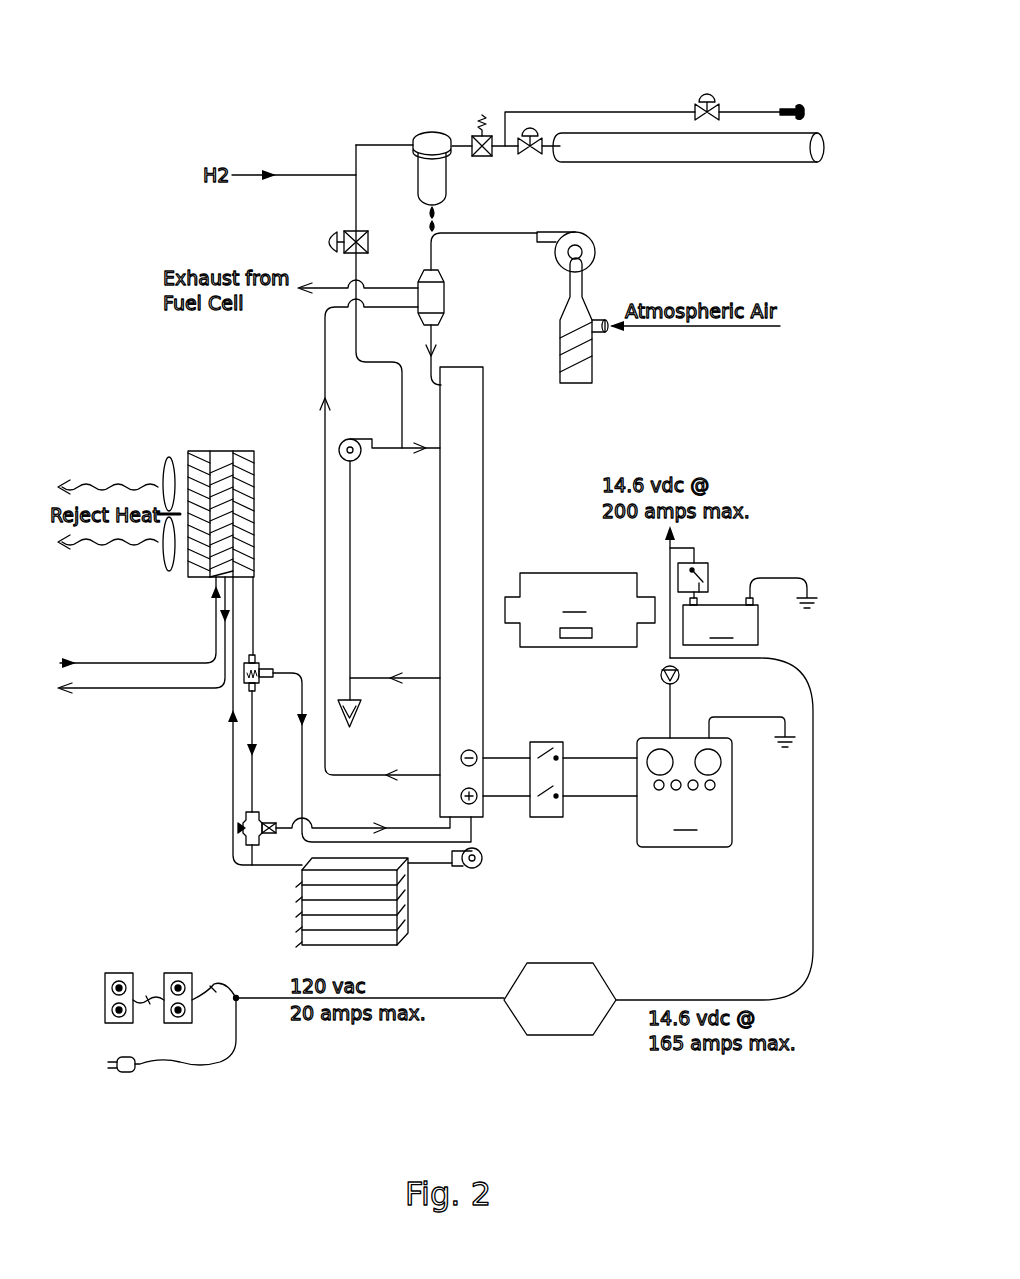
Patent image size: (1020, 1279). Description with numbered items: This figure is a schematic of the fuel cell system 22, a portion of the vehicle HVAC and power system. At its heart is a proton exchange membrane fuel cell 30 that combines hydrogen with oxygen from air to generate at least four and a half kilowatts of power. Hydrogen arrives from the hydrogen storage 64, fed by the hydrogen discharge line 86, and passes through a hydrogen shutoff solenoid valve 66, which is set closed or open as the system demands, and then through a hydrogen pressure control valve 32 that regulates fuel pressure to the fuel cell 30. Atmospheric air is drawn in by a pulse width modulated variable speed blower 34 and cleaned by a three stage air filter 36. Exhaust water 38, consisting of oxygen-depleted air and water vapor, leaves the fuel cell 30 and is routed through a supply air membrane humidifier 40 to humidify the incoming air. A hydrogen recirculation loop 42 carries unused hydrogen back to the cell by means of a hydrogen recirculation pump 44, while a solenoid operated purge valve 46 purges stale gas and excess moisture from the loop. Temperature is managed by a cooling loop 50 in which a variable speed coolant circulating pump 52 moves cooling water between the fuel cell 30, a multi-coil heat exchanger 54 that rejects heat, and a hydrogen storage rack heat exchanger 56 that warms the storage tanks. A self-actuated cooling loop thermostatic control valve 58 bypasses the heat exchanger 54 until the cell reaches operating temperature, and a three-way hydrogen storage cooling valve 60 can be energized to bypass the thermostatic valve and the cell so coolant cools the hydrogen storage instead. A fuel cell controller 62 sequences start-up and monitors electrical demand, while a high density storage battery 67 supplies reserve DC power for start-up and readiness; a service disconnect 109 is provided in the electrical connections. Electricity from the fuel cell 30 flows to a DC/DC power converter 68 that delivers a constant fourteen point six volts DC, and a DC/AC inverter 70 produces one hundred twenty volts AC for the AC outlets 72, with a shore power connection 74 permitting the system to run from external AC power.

The fuel cell system 22 is at (148, 140).
The fuel cell 30 is at (483, 405).
The hydrogen pressure control valve 32 is at (321, 242).
The variable speed blower 34 is at (583, 231).
The three stage air filter 36 is at (592, 370).
The exhaust water 38 is at (342, 775).
The supply air membrane humidifier 40 is at (444, 287).
The hydrogen recirculation loop 42 is at (350, 577).
The hydrogen recirculation pump 44 is at (353, 458).
The solenoid operated purge valve 46 is at (361, 712).
The cooling loop 50 is at (432, 866).
The coolant circulating pump 52 is at (484, 866).
The multi-coil heat exchanger 54 is at (222, 451).
The hydrogen storage rack heat exchanger 56 is at (302, 893).
The cooling loop thermostatic control valve 58 is at (258, 818).
The hydrogen storage cooling valve 60 is at (260, 664).
The fuel cell controller 62 is at (580, 610).
The hydrogen storage 64 is at (741, 165).
The hydrogen shutoff solenoid valve 66 is at (482, 116).
The high density storage battery 67 is at (720, 621).
The DC/DC power converter 68 is at (684, 792).
The DC/AC inverter 70 is at (560, 1035).
The AC outlets 72 is at (172, 973).
The shore power connection 74 is at (135, 1072).
The hydrogen discharge line 86 is at (432, 132).
The service disconnect 109 is at (705, 562).